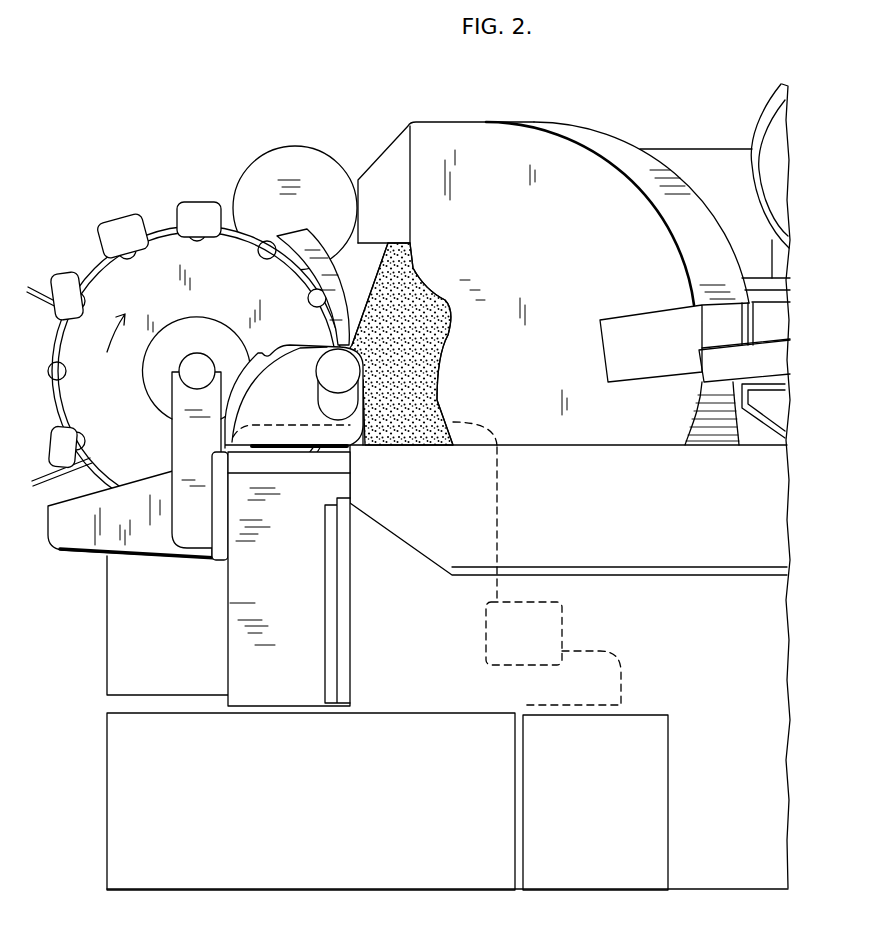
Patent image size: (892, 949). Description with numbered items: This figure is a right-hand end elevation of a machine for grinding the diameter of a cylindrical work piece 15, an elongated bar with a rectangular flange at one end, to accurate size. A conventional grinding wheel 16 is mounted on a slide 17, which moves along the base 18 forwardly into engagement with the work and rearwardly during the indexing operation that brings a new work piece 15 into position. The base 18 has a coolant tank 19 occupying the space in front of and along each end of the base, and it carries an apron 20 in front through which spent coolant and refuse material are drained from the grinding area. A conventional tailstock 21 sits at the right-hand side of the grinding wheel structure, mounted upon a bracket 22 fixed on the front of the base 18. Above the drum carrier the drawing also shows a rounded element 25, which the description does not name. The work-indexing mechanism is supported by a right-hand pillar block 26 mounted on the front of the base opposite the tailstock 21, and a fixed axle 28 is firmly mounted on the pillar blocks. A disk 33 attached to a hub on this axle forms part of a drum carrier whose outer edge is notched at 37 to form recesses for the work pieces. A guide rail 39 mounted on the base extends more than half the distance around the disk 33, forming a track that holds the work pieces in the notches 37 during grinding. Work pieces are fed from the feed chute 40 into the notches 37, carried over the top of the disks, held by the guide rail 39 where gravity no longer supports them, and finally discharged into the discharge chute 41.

The work piece 15 is at (112, 226).
The grinding wheel 16 is at (420, 338).
The slide 17 is at (752, 511).
The base 18 is at (740, 634).
The coolant tank 19 is at (118, 742).
The apron 20 is at (100, 540).
The tailstock 21 is at (330, 375).
The bracket 22 is at (300, 563).
The drum 25 is at (267, 183).
The right-hand pillar block 26 is at (180, 491).
The fixed axle 28 is at (190, 376).
The disk 33 is at (160, 243).
The notches 37 is at (200, 213).
The guide rail 39 is at (308, 245).
The feed chute 40 is at (39, 287).
The discharge chute 41 is at (45, 490).